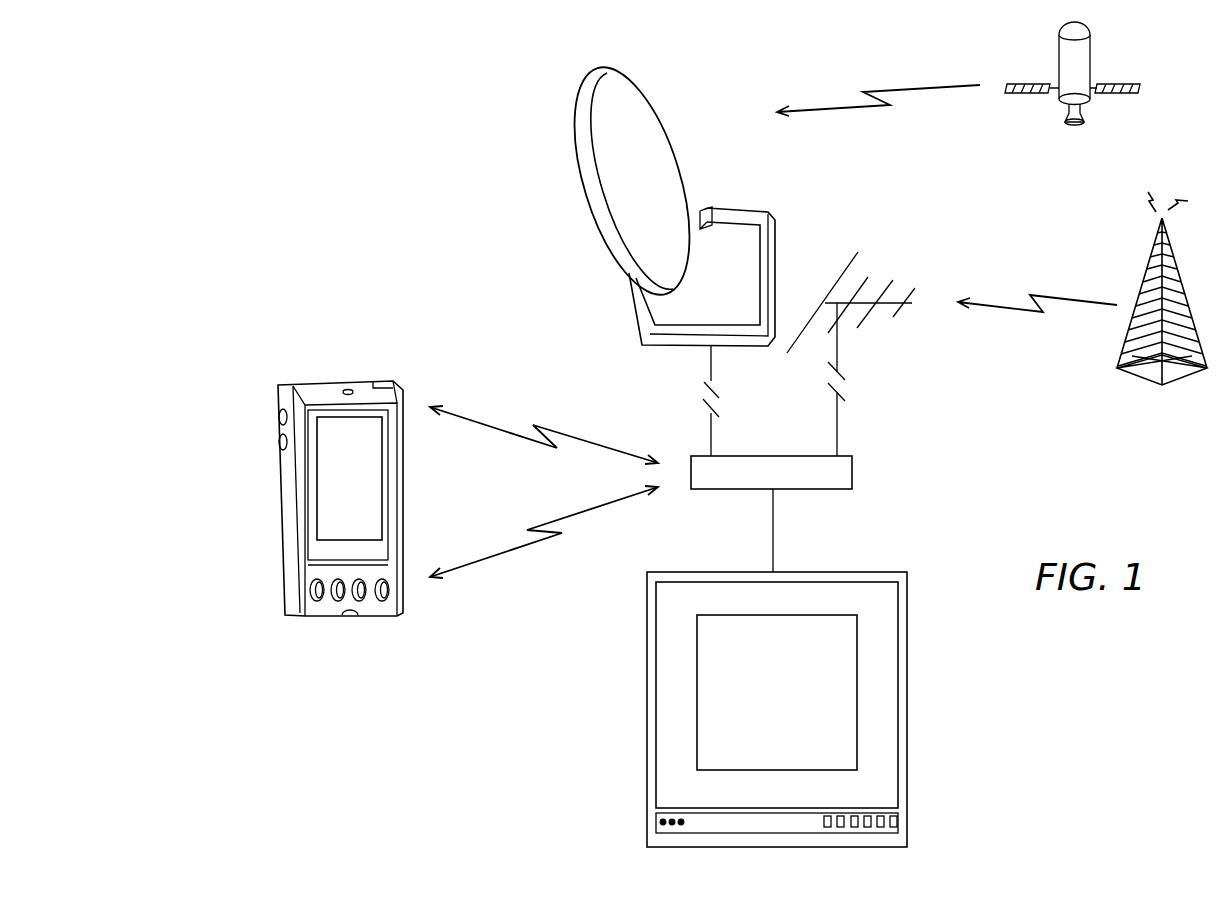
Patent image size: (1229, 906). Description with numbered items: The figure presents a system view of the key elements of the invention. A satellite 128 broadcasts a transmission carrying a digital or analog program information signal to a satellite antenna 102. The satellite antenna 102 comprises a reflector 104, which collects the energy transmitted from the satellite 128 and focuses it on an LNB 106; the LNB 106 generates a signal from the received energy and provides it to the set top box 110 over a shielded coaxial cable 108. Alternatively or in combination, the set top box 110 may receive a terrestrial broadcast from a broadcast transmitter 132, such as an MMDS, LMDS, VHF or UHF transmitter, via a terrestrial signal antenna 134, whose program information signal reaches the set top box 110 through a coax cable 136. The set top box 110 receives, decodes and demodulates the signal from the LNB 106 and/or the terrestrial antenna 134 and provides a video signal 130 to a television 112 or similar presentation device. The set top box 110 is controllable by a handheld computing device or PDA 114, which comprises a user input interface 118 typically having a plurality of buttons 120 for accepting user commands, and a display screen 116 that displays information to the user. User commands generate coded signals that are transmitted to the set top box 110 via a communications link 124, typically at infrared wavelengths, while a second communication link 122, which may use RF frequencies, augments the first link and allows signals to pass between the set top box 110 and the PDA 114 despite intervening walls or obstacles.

The satellite antenna 102 is at (553, 165).
The reflector 104 is at (667, 165).
The LNB 106 is at (718, 200).
The shielded coaxial cable 108 is at (712, 377).
The set top box 110 is at (852, 472).
The television 112 is at (813, 571).
The handheld computing device or PDA 114 is at (318, 385).
The display screen 116 is at (367, 407).
The user input interface 118 is at (330, 607).
The buttons 120 is at (395, 595).
The communication link 122 is at (475, 420).
The communications link 124 is at (530, 545).
The satellite 128 is at (1060, 59).
The video signal 130 is at (770, 550).
The broadcast transmitter 132 is at (1147, 262).
The terrestrial signal antenna 134 is at (867, 281).
The coax cable 136 is at (837, 421).